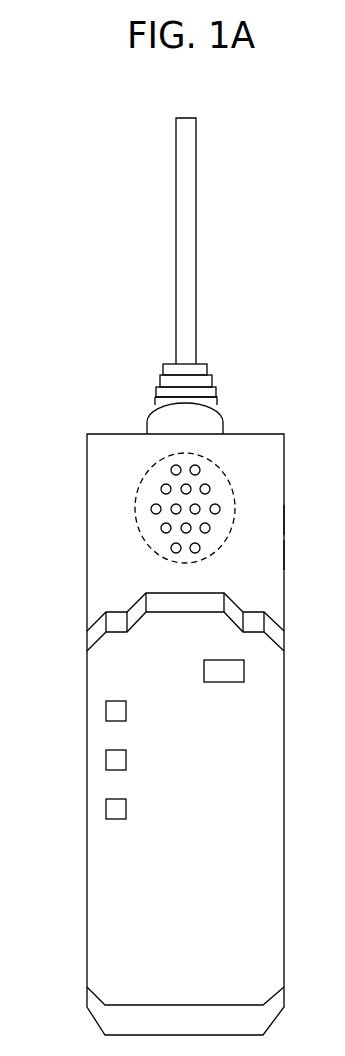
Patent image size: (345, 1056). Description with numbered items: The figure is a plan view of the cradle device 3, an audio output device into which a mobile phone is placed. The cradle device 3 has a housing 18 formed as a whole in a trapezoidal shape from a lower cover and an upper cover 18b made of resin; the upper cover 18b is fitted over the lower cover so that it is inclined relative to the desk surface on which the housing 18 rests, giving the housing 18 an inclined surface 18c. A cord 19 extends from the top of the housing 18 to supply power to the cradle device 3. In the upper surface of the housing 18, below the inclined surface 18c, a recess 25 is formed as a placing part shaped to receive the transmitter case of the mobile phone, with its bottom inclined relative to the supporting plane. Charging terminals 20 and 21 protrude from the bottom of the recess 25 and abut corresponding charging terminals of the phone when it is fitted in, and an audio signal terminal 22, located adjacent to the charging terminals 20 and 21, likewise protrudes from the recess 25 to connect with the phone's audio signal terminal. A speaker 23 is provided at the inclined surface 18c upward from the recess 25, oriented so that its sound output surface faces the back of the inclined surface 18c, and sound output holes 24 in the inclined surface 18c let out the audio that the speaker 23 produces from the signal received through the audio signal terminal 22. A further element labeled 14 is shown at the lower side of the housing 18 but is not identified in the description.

The cradle device 3 is at (277, 166).
The cord 19 is at (196, 233).
The housing 18 is at (284, 470).
The upper cover 18b is at (276, 521).
The inclined surface 18c is at (276, 550).
The speaker 23 is at (135, 512).
The sound output holes 24 is at (208, 486).
The recess 25 is at (277, 684).
The charging terminal 20 is at (106, 711).
The audio signal terminal 22 is at (106, 760).
The charging terminal 21 is at (106, 809).
The lower housing portion 14 is at (344, 912).